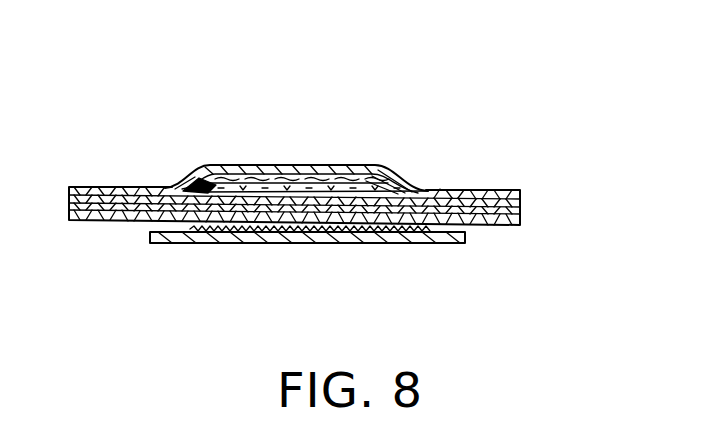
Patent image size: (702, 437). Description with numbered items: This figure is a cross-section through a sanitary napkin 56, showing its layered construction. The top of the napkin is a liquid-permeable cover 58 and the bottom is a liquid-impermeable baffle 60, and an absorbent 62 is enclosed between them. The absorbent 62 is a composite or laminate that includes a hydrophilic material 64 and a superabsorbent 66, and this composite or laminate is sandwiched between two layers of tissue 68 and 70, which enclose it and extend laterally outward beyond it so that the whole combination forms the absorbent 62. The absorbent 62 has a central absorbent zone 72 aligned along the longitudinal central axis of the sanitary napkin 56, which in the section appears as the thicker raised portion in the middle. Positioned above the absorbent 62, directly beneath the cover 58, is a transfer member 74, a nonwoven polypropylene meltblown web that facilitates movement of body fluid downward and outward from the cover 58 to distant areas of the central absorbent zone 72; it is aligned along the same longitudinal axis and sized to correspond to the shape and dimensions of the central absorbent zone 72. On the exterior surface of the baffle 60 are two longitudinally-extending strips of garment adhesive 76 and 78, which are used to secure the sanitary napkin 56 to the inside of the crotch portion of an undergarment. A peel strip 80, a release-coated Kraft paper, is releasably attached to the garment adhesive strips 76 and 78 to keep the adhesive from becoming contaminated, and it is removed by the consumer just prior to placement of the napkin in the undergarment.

The sanitary napkin 56 is at (462, 70).
The liquid-permeable cover 58 is at (278, 164).
The liquid-impermeable baffle 60 is at (497, 228).
The absorbent 62 is at (200, 186).
The hydrophilic material 64 is at (380, 175).
The superabsorbent 66 is at (331, 178).
The tissue layer 68 is at (524, 203).
The tissue layer 70 is at (524, 205).
The central absorbent zone 72 is at (252, 177).
The transfer member 74 is at (407, 180).
The strip of garment adhesive 76 is at (228, 238).
The strip of garment adhesive 78 is at (413, 243).
The peel strip 80 is at (308, 243).